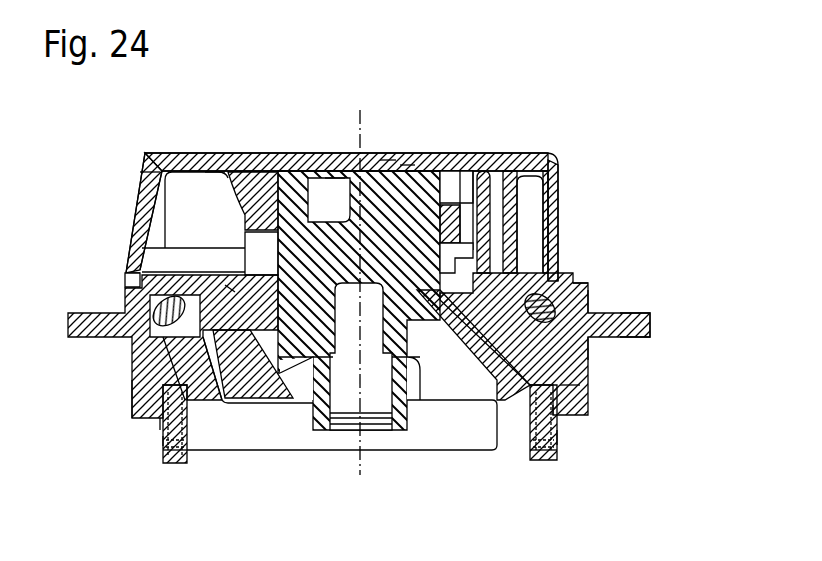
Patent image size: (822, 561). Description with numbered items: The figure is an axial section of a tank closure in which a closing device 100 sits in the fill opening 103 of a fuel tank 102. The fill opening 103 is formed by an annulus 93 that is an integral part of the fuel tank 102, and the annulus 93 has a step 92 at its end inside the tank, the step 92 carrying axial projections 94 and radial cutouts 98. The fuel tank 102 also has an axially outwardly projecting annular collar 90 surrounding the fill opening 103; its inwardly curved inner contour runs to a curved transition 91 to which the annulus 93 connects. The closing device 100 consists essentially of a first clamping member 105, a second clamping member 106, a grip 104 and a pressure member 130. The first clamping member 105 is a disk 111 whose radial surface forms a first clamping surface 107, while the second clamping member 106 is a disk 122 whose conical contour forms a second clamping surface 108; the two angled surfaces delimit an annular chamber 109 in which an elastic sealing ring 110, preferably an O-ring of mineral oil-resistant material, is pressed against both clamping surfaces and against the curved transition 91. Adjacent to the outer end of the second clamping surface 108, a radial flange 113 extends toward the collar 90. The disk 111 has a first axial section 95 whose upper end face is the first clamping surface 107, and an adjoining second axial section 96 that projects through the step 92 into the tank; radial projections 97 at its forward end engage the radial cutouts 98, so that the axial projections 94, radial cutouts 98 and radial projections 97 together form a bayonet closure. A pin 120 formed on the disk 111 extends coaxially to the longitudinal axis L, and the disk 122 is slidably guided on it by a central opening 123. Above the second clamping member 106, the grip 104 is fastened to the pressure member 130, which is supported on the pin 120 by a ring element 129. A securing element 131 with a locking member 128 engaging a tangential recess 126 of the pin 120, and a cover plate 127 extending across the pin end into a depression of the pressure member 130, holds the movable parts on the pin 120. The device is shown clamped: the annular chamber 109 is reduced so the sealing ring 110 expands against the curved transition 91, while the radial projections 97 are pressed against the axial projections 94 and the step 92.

The closing device 100 is at (580, 157).
The grip 104 is at (513, 160).
The disk 122 is at (178, 263).
The pressure member 130 is at (176, 153).
The central opening 123 is at (213, 175).
The second clamping member 106 is at (230, 290).
The pin 120 is at (313, 307).
The tangential recess 126 is at (330, 175).
The locking member 128 is at (285, 160).
The securing element 131 is at (388, 150).
The cover plate 127 is at (406, 166).
The longitudinal axis L is at (358, 127).
The ring element 129 is at (457, 218).
The fill opening 103 is at (173, 332).
The second clamping surface 108 is at (163, 323).
The annulus 93 is at (140, 392).
The step 92 is at (157, 420).
The radial cutouts 98 is at (173, 462).
The axial projections 94 is at (160, 440).
The disk 111 is at (230, 377).
The first clamping member 105 is at (237, 403).
The annular chamber 109 is at (497, 395).
The first clamping surface 107 is at (575, 355).
The radial flange 113 is at (560, 285).
The sealing ring 110 is at (570, 285).
The annular collar 90 is at (593, 293).
The fuel tank 102 is at (637, 312).
The curved transition 91 is at (590, 337).
The first axial section 95 is at (587, 397).
The second axial section 96 is at (517, 420).
The radial projections 97 is at (557, 437).